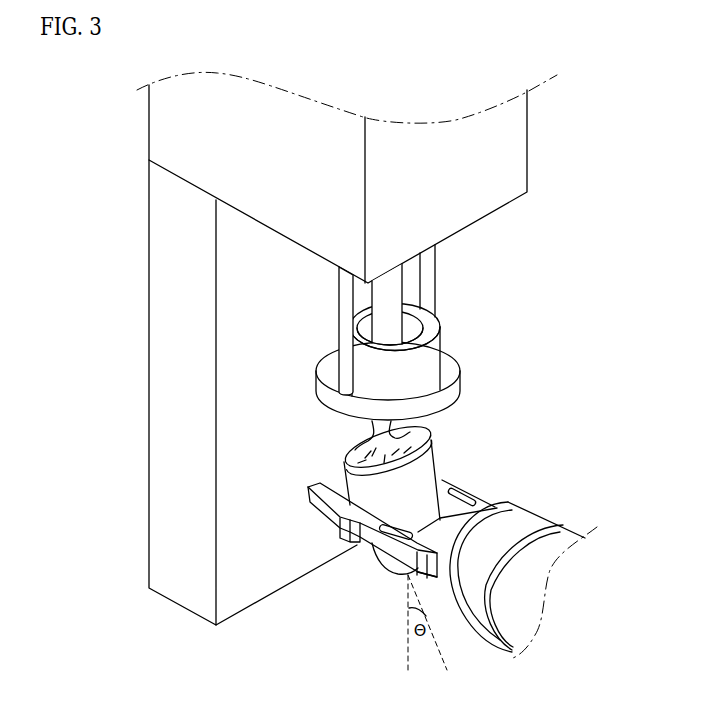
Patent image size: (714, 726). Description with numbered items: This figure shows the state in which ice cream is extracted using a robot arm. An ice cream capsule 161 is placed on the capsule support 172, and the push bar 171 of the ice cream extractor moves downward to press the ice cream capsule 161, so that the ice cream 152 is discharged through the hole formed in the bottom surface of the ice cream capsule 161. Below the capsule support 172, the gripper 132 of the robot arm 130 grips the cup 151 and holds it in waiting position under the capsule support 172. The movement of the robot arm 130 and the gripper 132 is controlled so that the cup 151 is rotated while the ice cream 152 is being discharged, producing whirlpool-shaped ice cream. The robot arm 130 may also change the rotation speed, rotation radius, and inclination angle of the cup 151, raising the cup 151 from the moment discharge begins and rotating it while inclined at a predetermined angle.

The robot arm 130 is at (560, 510).
The gripper 132 is at (318, 529).
The cup 151 is at (440, 476).
The ice cream 152 is at (370, 431).
The ice cream capsule 161 is at (422, 365).
The push bar 171 is at (397, 293).
The capsule support 172 is at (452, 393).